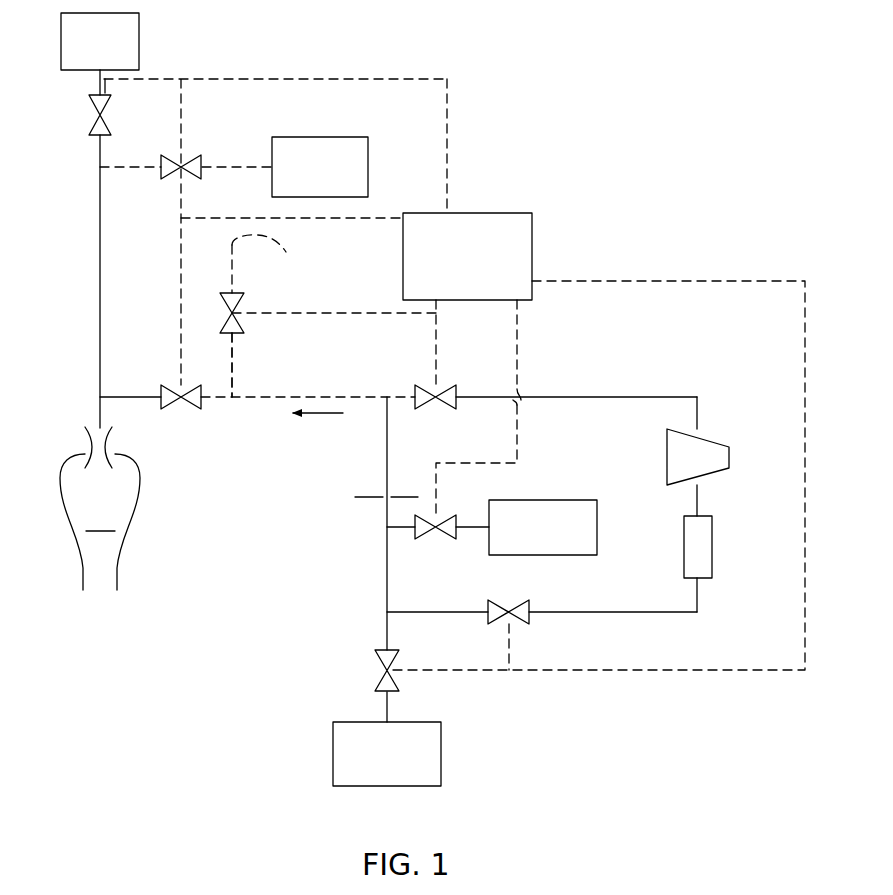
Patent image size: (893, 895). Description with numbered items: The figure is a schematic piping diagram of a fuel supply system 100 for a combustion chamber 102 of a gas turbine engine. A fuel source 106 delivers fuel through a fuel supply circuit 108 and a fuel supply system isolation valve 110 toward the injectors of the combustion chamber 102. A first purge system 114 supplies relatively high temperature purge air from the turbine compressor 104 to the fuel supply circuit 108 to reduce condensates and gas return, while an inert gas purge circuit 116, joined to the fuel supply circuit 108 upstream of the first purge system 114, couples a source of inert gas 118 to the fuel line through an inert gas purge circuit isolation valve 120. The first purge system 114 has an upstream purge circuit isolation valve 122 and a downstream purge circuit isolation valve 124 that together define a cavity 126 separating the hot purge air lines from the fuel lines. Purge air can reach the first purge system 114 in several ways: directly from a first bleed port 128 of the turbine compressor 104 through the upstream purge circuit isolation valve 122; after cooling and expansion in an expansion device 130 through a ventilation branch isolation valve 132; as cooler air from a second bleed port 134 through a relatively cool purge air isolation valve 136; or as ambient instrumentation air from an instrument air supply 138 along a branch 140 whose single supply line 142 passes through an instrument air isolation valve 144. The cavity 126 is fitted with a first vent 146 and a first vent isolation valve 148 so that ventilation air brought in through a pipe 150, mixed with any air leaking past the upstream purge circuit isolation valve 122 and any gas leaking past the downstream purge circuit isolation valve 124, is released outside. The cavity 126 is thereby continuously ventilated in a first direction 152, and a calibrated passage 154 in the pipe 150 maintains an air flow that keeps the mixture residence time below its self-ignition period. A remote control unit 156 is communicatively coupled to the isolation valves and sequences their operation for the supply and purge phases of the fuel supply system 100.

The fuel supply system 100 is at (481, 80).
The combustion chamber 102 is at (100, 522).
The turbine compressor 104 is at (730, 458).
The fuel source 106 is at (139, 42).
The fuel supply circuit 108 is at (98, 289).
The fuel supply system isolation valve 110 is at (90, 126).
The first purge system 114 is at (165, 343).
The inert gas purge circuit 116 is at (140, 150).
The source of inert gas 118 is at (368, 167).
The inert gas purge circuit isolation valve 120 is at (199, 157).
The upstream purge circuit isolation valve 122 is at (452, 386).
The downstream purge circuit isolation valve 124 is at (166, 386).
The cavity 126 is at (333, 383).
The first bleed port 128 is at (699, 437).
The expansion device 130 is at (597, 527).
The ventilation branch isolation valve 132 is at (452, 513).
The second bleed port 134 is at (700, 479).
The relatively cool purge air isolation valve 136 is at (490, 601).
The instrument air supply 138 is at (441, 752).
The branch 140 is at (360, 667).
The supply line 142 is at (390, 707).
The instrument air isolation valve 144 is at (400, 652).
The first vent 146 is at (236, 374).
The first vent isolation valve 148 is at (245, 308).
The pipe 150 is at (390, 447).
The first direction 152 is at (318, 414).
The calibrated passage 154 is at (380, 492).
The remote control unit 156 is at (532, 258).